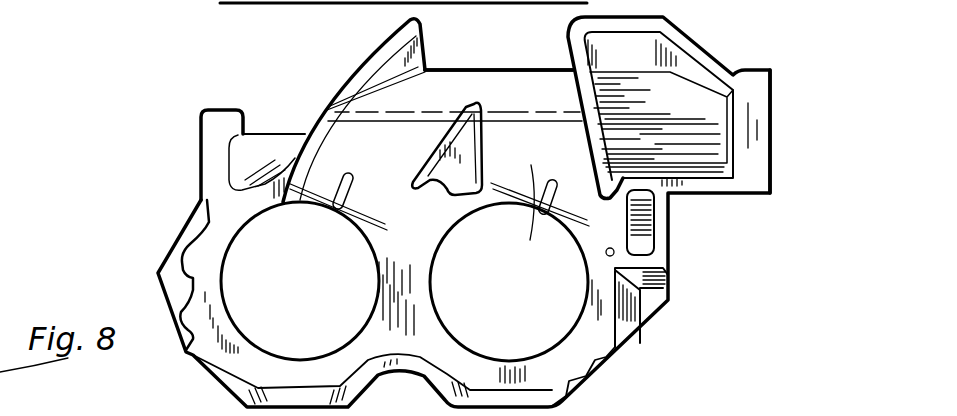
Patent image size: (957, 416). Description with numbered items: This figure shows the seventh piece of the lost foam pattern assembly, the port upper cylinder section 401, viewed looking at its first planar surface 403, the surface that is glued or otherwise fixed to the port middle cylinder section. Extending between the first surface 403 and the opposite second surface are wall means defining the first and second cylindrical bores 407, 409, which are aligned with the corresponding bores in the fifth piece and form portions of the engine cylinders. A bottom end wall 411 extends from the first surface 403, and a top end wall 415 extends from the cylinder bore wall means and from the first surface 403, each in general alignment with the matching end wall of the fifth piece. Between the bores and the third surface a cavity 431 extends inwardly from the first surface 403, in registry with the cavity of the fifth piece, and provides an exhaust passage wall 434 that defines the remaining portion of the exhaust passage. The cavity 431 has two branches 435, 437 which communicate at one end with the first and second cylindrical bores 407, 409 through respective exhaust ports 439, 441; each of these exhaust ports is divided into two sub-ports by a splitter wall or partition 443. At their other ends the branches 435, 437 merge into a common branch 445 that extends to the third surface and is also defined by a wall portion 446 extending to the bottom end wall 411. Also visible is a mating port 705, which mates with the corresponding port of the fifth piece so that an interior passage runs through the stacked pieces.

The port upper cylinder section 401 is at (674, 239).
The first planar surface 403 is at (362, 64).
The first cylindrical bore 407 is at (275, 323).
The second cylindrical bore 409 is at (527, 360).
The bottom end wall 411 is at (769, 137).
The top end wall 415 is at (157, 278).
The cavity 431 is at (340, 106).
The exhaust passage wall 434 is at (332, 121).
The first branch 435 is at (352, 142).
The second branch 437 is at (541, 163).
The exhaust port 439 is at (329, 204).
The exhaust port 441 is at (578, 208).
The splitter wall 443 is at (350, 176).
The common branch 445 is at (512, 58).
The wall portion 446 is at (662, 17).
The mating port 705 is at (637, 218).